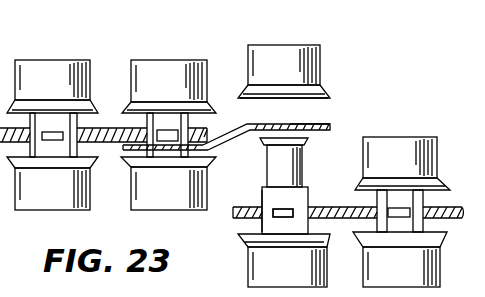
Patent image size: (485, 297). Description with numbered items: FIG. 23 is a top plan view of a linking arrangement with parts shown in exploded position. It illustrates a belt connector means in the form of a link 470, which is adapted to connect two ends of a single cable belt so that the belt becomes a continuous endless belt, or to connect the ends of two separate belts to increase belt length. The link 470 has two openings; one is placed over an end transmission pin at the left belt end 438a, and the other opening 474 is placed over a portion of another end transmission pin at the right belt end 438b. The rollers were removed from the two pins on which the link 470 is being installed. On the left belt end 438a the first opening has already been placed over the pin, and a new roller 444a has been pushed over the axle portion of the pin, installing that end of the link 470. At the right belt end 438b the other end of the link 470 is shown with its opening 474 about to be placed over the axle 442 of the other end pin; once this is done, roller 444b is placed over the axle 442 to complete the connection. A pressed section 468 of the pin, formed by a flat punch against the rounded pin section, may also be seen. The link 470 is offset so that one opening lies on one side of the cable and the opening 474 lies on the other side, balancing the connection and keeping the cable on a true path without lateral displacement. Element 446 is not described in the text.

The belt end 438a is at (114, 49).
The belt end 438b is at (355, 144).
The axle 442 is at (282, 162).
The roller 444a is at (162, 197).
The roller 444b is at (317, 63).
The flange 446 is at (292, 100).
The pressed section 468 is at (270, 212).
The link 470 is at (234, 111).
The opening 474 is at (300, 116).